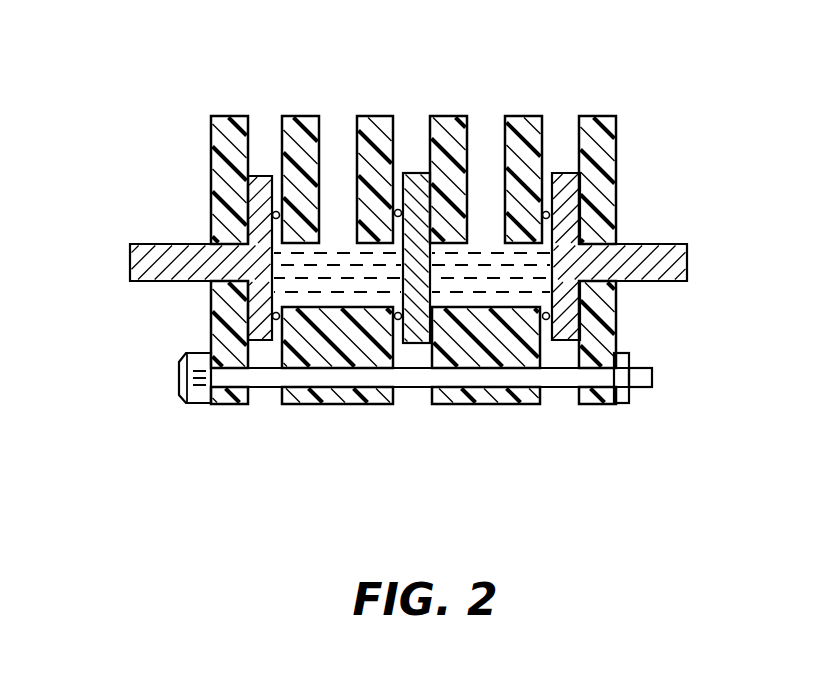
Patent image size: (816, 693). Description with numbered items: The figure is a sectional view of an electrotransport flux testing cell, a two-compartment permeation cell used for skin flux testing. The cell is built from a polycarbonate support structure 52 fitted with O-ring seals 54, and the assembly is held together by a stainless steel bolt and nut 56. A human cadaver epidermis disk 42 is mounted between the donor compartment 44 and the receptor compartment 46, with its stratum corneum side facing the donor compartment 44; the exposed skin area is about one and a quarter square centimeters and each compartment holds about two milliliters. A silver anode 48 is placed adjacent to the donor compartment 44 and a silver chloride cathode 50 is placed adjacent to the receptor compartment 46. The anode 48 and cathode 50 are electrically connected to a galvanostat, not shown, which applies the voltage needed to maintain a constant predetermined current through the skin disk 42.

The human cadaver epidermis disk 42 is at (416, 327).
The donor compartment 44 is at (328, 265).
The receptor compartment 46 is at (545, 262).
The silver anode 48 is at (168, 257).
The silver chloride cathode 50 is at (658, 268).
The polycarbonate support structure 52 is at (368, 118).
The O-ring seals 54 is at (393, 327).
The stainless steel bolt and nut 56 is at (195, 403).